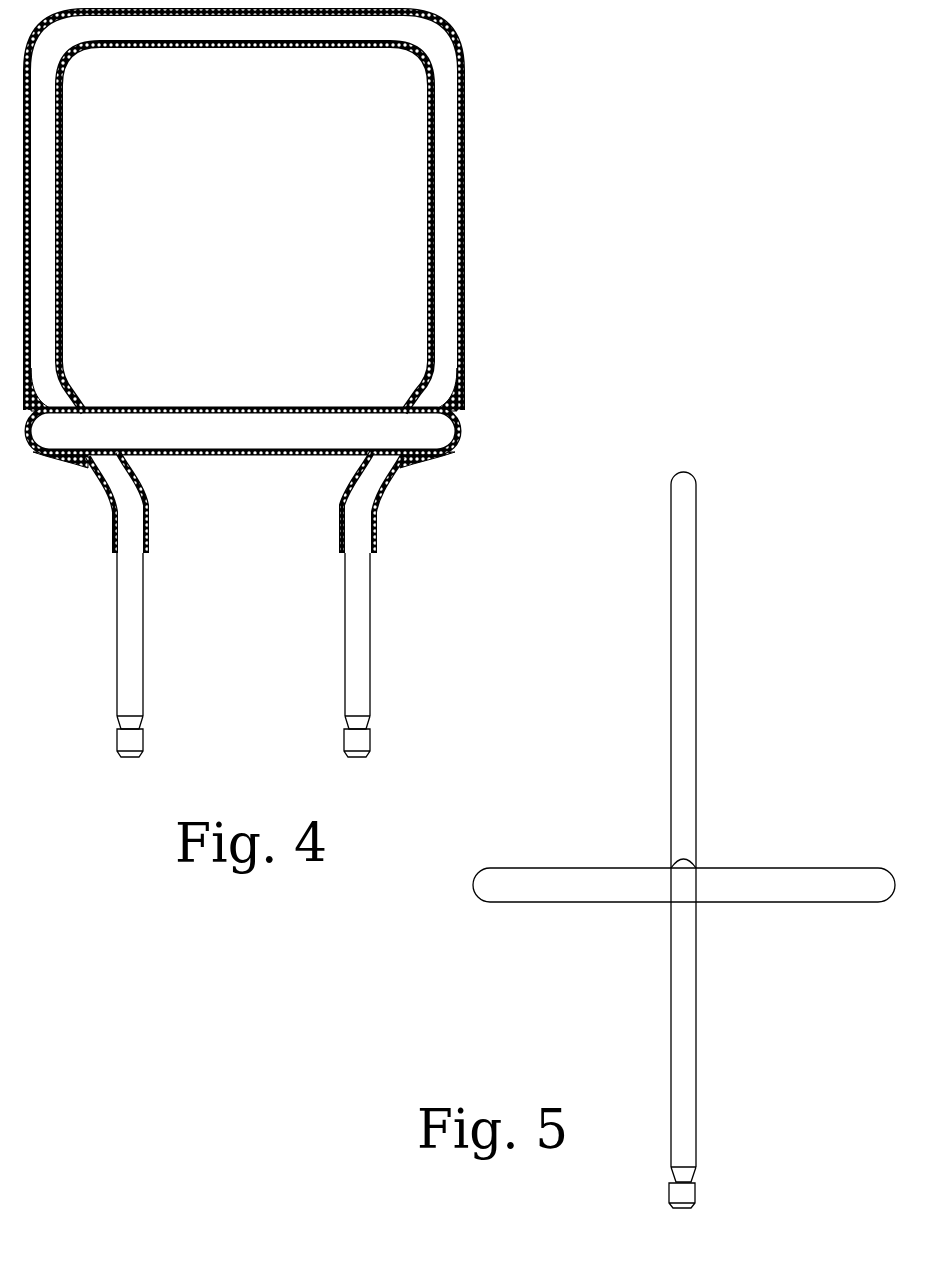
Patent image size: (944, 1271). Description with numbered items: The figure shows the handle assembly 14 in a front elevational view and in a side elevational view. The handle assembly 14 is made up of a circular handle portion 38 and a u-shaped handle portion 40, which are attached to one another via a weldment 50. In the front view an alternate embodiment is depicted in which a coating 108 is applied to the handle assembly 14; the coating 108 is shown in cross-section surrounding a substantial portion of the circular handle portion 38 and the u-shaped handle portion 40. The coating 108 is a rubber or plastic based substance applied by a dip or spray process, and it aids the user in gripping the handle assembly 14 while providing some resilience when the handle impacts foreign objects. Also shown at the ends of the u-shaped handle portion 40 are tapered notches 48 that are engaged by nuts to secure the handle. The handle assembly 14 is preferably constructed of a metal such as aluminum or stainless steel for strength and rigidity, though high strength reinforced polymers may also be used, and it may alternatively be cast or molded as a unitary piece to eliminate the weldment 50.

In FIG. 4, the handle assembly 14 is at (566, 203).
In FIG. 5, the handle assembly 14 is at (548, 1009).
In FIG. 4, the circular handle portion 38 is at (330, 410).
In FIG. 5, the circular handle portion 38 is at (718, 902).
In FIG. 4, the u-shaped handle portion 40 is at (370, 648).
In FIG. 5, the u-shaped handle portion 40 is at (697, 705).
In FIG. 4, the tapered notches 48 is at (142, 725).
In FIG. 5, the tapered notches 48 is at (695, 1177).
In FIG. 5, the weldment 50 is at (686, 860).
In FIG. 4, the coating 108 is at (460, 411).